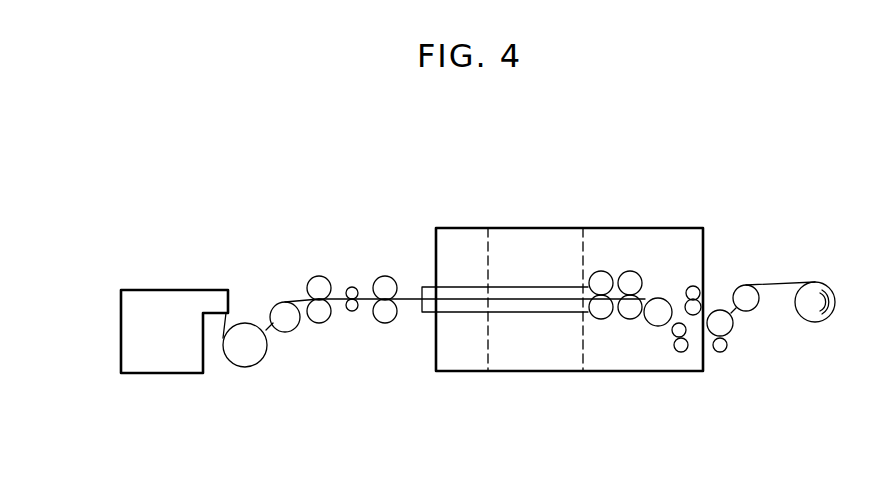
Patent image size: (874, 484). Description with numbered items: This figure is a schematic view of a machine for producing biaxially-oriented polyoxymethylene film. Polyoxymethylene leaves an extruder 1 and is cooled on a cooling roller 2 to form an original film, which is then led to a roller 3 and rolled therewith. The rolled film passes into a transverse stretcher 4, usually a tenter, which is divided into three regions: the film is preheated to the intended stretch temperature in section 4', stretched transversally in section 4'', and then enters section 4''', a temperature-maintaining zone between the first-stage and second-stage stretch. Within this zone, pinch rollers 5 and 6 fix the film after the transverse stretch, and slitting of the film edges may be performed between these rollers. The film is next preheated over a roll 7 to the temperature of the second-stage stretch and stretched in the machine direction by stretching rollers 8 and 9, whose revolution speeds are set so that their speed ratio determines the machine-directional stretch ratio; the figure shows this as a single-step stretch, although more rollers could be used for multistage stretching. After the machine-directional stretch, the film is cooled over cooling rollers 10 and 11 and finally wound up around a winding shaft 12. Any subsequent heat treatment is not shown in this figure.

The extruder 1 is at (163, 291).
The cooling roller 2 is at (245, 367).
The roller 3 is at (355, 287).
The transverse stretcher 4 is at (562, 268).
The preheating section 4' is at (468, 335).
The transverse stretching section 4'' is at (555, 335).
The temperature-maintaining zone 4''' is at (645, 407).
The pinch roller 5 is at (601, 271).
The pinch roller 6 is at (631, 271).
The roll 7 is at (663, 298).
The stretching roller 8 is at (688, 332).
The stretching roller 9 is at (696, 304).
The cooling roller 10 is at (727, 333).
The cooling roller 11 is at (748, 287).
The winding shaft 12 is at (815, 290).